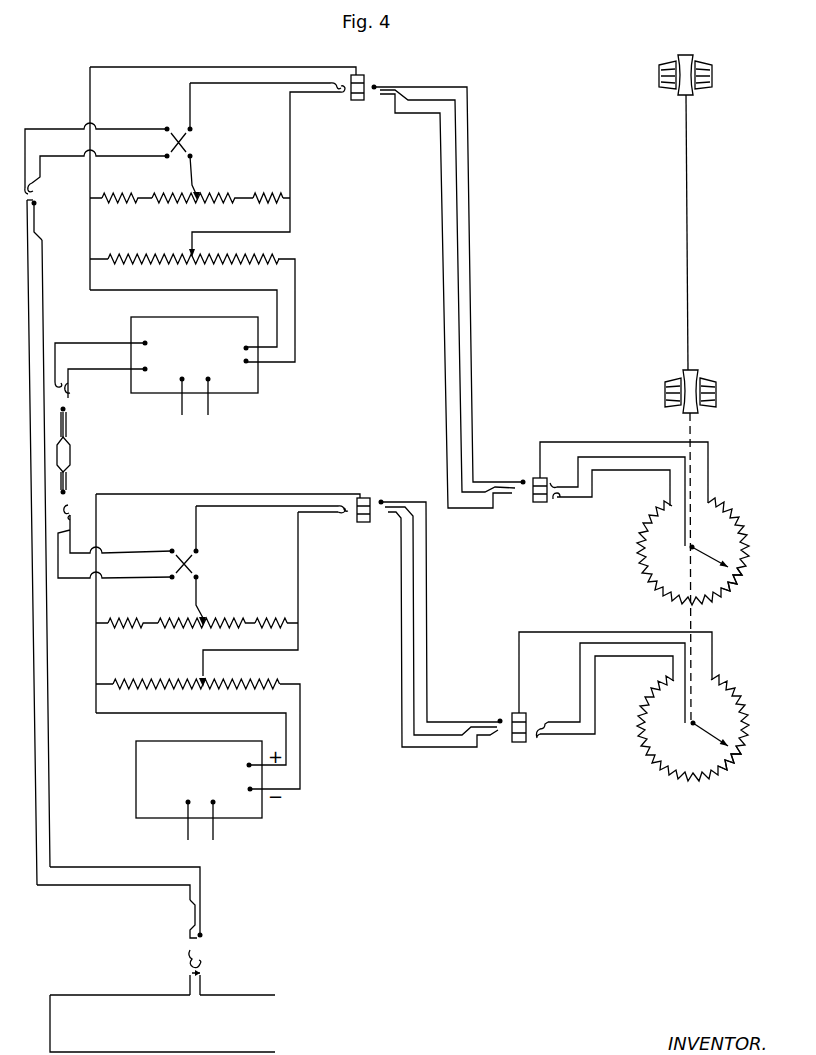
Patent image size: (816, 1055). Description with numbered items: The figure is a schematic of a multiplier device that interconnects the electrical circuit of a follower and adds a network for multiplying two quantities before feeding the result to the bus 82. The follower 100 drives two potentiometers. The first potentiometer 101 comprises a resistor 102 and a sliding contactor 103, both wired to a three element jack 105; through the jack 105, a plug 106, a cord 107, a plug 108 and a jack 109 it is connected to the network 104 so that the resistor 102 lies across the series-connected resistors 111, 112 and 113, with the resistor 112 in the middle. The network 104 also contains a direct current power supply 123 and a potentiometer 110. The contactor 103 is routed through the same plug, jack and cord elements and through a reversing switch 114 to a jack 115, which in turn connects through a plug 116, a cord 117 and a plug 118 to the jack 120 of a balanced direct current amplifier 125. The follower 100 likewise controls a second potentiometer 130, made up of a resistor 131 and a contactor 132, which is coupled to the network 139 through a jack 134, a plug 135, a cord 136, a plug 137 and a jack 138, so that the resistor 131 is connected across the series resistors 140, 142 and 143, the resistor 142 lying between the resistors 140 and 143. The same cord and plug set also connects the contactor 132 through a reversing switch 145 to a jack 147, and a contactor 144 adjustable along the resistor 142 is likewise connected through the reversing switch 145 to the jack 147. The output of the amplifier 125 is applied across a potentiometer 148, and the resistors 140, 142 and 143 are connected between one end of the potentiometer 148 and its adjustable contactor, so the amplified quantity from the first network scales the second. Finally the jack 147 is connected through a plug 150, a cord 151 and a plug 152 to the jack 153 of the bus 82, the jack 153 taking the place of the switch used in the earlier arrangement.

The bus 82 is at (214, 1050).
The follower 100 is at (693, 53).
The potentiometer 101 is at (727, 680).
The resistor 102 is at (722, 768).
The sliding contactor 103 is at (707, 738).
The network 104 is at (162, 664).
The three element jack 105 is at (540, 738).
The plug 106 is at (490, 718).
The cord 107 is at (398, 645).
The plug 108 is at (386, 500).
The jack 109 is at (352, 524).
The potentiometer 110 is at (230, 684).
The resistor 111 is at (136, 620).
The resistor 112 is at (197, 620).
The resistor 113 is at (270, 618).
The reversing switch 114 is at (187, 567).
The jack 115 is at (72, 510).
The plug 116 is at (68, 484).
The cord 117 is at (71, 450).
The plug 118 is at (68, 423).
The jack 120 is at (70, 387).
The direct current power supply 123 is at (199, 790).
The balanced direct current amplifier 125 is at (194, 366).
The potentiometer 130 is at (730, 505).
The resistor 131 is at (722, 590).
The contactor 132 is at (708, 553).
The jack 134 is at (560, 497).
The plug 135 is at (521, 480).
The cord 136 is at (480, 357).
The plug 137 is at (381, 84).
The jack 138 is at (345, 100).
The network 139 is at (136, 240).
The resistor 140 is at (128, 196).
The resistor 142 is at (209, 200).
The resistor 143 is at (272, 192).
The contactor 144 is at (194, 185).
The reversing switch 145 is at (188, 141).
The jack 147 is at (38, 179).
The potentiometer 148 is at (199, 262).
The plug 150 is at (37, 208).
The cord 151 is at (45, 765).
The plug 152 is at (207, 928).
The jack 153 is at (205, 960).